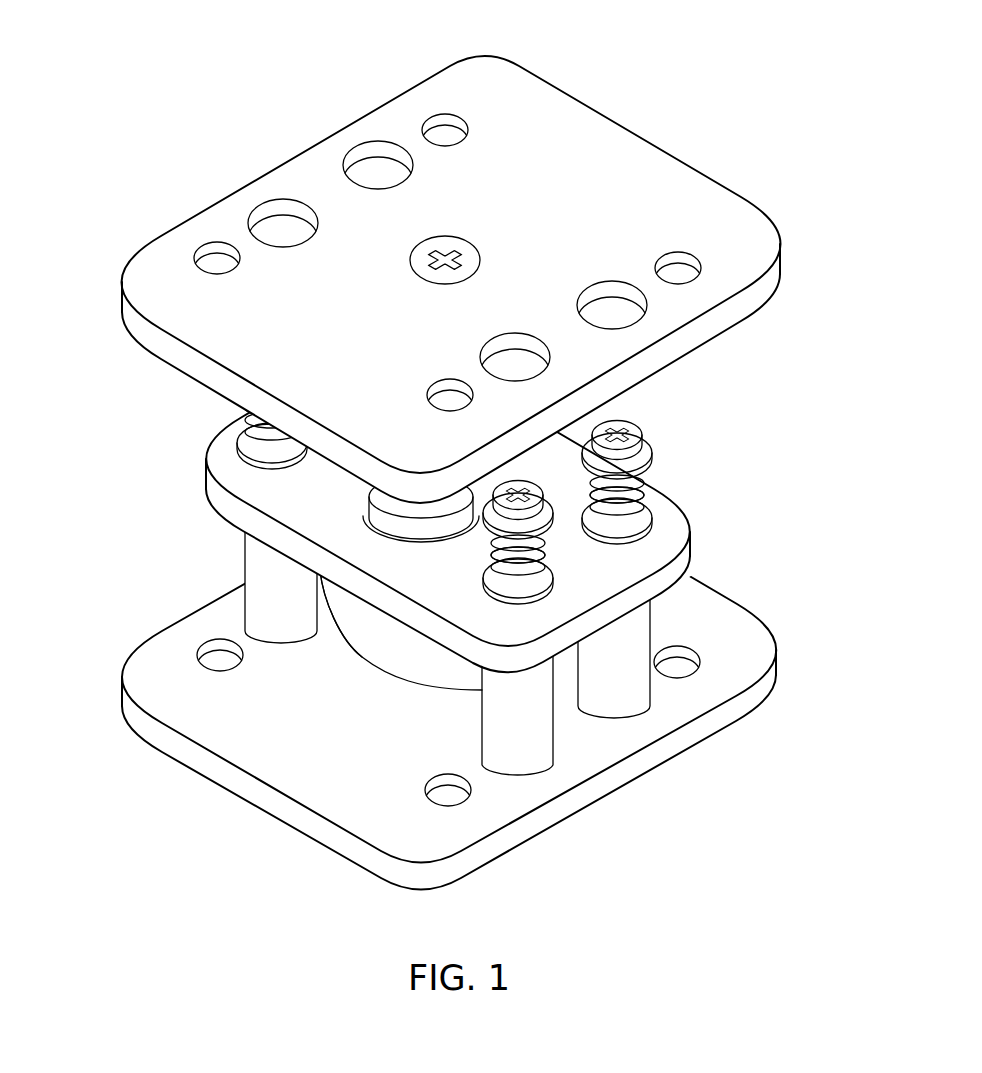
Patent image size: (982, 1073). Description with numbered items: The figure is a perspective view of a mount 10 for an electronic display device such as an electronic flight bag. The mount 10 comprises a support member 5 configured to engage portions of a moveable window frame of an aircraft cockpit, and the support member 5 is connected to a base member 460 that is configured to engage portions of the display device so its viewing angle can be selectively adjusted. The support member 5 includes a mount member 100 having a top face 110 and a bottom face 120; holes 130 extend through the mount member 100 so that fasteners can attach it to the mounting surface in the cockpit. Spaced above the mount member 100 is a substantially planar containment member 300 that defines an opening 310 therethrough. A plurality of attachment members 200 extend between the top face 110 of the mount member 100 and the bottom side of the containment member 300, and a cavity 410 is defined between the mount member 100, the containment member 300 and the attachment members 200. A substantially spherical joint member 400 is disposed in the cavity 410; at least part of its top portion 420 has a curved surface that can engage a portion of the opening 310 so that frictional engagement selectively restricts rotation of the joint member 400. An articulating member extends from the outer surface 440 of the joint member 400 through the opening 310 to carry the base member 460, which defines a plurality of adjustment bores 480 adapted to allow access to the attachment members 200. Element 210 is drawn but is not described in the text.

The support member 5 is at (810, 510).
The mount 10 is at (641, 58).
The mount member 100 is at (776, 598).
The top face 110 is at (713, 600).
The bottom face 120 is at (718, 733).
The holes 130 is at (447, 795).
The attachment members 200 is at (630, 437).
The spring 210 is at (642, 480).
The containment member 300 is at (208, 470).
The opening 310 is at (370, 483).
The joint member 400 is at (377, 652).
The cavity 410 is at (562, 695).
The top portion 420 is at (420, 517).
The outer surface 440 is at (358, 628).
The base member 460 is at (695, 188).
The adjustment bores 480 is at (602, 308).